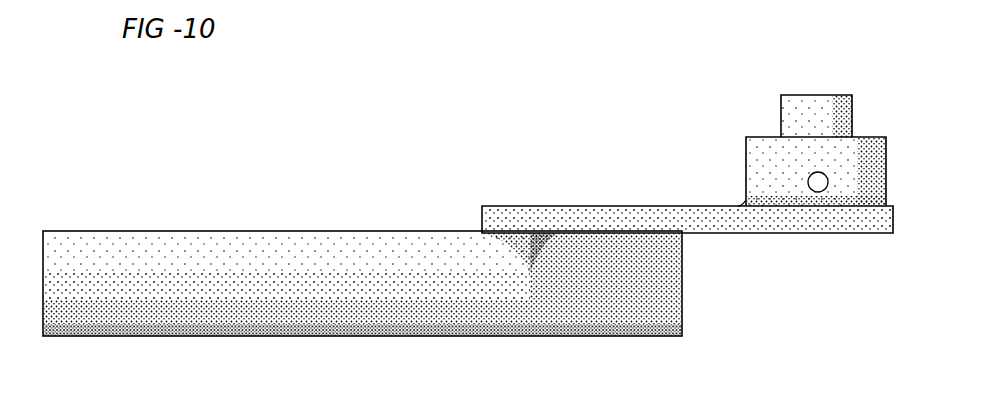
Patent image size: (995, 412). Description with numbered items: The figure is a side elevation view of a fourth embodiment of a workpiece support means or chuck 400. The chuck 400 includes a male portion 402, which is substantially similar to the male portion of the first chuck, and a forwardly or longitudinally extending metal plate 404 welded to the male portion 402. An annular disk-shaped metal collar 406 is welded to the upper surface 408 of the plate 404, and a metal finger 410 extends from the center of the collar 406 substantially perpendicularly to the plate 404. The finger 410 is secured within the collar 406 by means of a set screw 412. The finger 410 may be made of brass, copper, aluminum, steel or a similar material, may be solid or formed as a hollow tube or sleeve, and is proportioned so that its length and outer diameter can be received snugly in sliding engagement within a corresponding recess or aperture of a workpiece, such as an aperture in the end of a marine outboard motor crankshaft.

The workpiece support means or chuck 400 is at (468, 198).
The male portion 402 is at (258, 240).
The metal plate 404 is at (610, 206).
The metal collar 406 is at (790, 190).
The upper surface 408 is at (704, 205).
The metal finger 410 is at (805, 95).
The set screw 412 is at (818, 192).